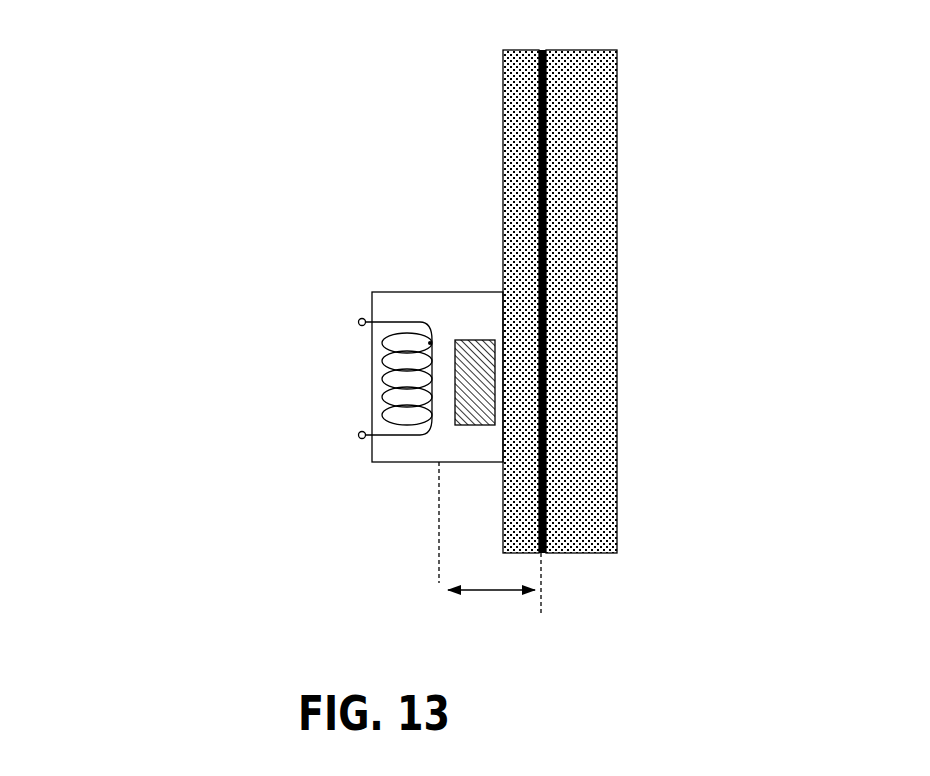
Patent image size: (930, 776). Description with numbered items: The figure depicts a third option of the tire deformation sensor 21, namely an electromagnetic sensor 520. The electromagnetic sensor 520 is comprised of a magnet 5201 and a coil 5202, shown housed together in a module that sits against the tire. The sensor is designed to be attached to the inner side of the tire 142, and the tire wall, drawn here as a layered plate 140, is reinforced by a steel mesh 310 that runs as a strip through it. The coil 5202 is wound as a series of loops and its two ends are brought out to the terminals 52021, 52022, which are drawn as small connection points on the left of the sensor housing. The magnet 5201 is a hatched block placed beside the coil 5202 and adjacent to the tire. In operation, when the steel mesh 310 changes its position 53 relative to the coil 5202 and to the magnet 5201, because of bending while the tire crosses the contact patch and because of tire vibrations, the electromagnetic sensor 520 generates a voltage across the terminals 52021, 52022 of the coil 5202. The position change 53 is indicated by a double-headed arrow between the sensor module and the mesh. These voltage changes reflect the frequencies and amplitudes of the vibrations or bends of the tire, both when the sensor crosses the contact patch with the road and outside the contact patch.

The tire deformation sensor 21 is at (332, 188).
The electromagnetic sensor 520 is at (238, 263).
The inner side of the tire 142 is at (505, 177).
The plate 140 is at (615, 240).
The steel mesh 310 is at (545, 417).
The coil 5202 is at (383, 442).
The terminal 52022 is at (343, 322).
The terminal 52021 is at (345, 430).
The magnet 5201 is at (475, 430).
The position change of the steel mesh 53 is at (473, 600).